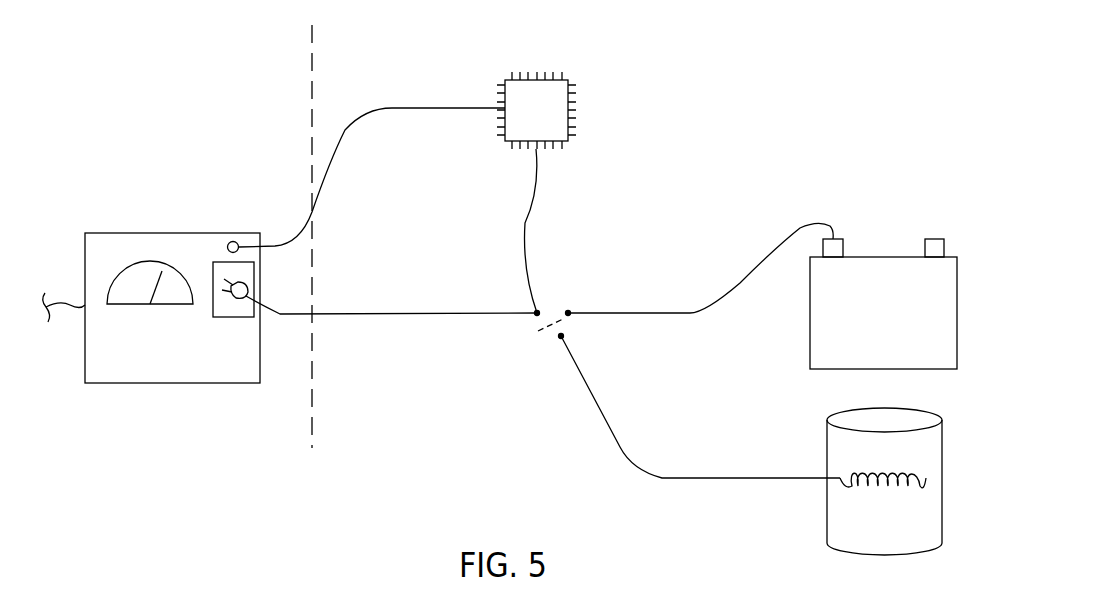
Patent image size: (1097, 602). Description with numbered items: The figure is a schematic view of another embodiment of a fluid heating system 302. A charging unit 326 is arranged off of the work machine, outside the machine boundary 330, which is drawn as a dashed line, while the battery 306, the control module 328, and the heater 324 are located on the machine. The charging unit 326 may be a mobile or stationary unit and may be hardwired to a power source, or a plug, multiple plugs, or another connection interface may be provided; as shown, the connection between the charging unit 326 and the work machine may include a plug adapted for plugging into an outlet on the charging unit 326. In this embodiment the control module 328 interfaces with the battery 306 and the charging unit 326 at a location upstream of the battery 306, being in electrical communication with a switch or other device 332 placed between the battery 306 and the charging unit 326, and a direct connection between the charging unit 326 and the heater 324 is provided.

The fluid heating system 302 is at (136, 52).
The machine boundary 330 is at (314, 66).
The charging unit 326 is at (173, 232).
The control module 328 is at (540, 110).
The switch or other device 332 is at (555, 302).
The battery 306 is at (883, 370).
The heater 324 is at (872, 490).